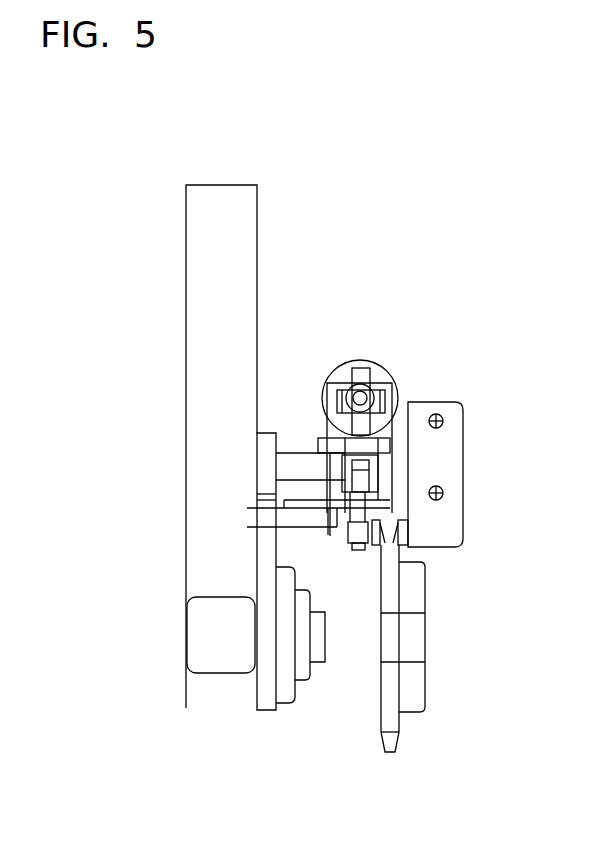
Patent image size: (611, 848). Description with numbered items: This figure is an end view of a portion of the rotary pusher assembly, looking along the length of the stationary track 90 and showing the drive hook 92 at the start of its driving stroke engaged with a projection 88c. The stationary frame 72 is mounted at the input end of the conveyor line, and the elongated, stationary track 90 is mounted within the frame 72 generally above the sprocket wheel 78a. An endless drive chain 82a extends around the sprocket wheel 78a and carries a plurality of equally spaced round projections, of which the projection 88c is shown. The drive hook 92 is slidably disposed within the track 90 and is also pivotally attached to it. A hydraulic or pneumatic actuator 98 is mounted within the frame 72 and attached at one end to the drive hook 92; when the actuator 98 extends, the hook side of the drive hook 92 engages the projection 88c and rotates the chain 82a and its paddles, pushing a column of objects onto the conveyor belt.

The stationary frame 72 is at (205, 308).
The stationary track 90 is at (323, 465).
The hydraulic or pneumatic actuator 98 is at (377, 375).
The round projection 88c is at (348, 535).
The drive hook 92 is at (360, 547).
The endless drive chain 82a is at (407, 543).
The sprocket wheel 78a is at (390, 722).